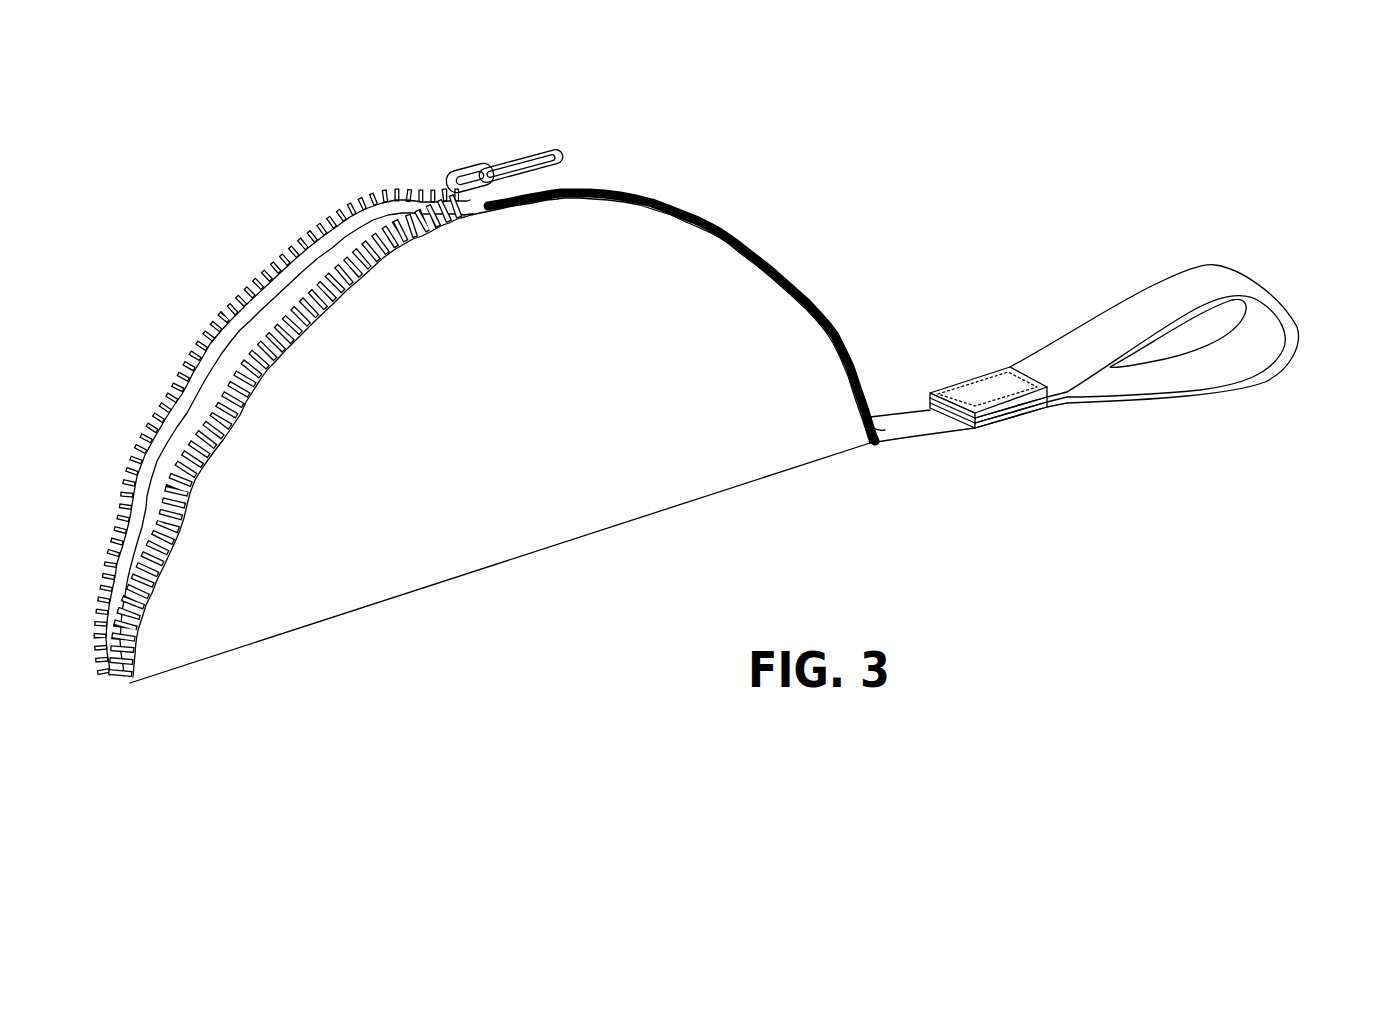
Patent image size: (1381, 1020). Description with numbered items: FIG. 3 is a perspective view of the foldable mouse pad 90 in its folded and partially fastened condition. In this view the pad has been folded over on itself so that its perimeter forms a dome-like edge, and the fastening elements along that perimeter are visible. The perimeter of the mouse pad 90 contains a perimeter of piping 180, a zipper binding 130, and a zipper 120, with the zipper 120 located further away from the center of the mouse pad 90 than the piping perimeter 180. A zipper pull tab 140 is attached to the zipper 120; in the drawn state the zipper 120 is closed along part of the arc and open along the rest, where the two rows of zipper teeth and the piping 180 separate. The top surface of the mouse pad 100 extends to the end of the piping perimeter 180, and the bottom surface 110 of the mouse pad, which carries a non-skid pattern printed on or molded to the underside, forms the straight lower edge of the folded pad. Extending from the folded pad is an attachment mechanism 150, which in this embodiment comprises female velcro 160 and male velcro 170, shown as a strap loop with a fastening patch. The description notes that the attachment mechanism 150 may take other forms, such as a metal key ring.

The foldable mouse pad 90 is at (107, 215).
The top surface of the mouse pad 100 is at (190, 413).
The bottom surface 110 is at (607, 510).
The zipper 120 is at (327, 230).
The zipper binding 130 is at (380, 208).
The zipper pull tab 140 is at (537, 160).
The attachment mechanism 150 is at (1227, 277).
The female velcro 160 is at (997, 430).
The male velcro 170 is at (985, 395).
The piping 180 is at (227, 350).